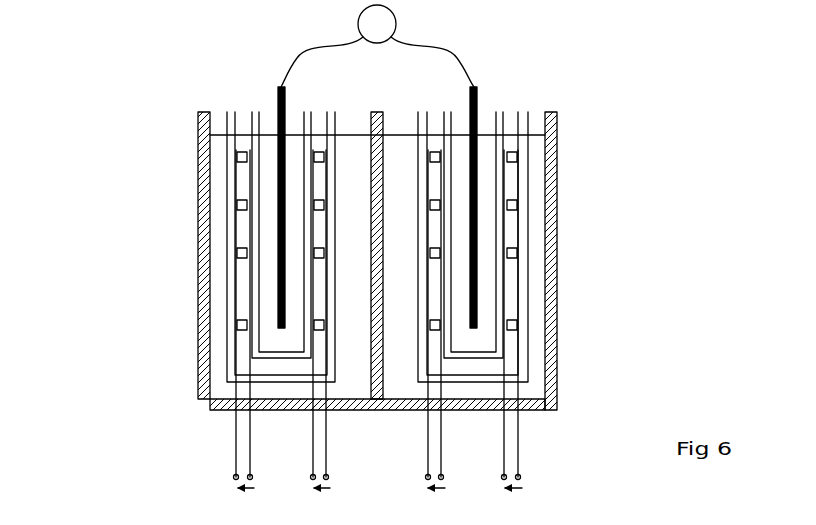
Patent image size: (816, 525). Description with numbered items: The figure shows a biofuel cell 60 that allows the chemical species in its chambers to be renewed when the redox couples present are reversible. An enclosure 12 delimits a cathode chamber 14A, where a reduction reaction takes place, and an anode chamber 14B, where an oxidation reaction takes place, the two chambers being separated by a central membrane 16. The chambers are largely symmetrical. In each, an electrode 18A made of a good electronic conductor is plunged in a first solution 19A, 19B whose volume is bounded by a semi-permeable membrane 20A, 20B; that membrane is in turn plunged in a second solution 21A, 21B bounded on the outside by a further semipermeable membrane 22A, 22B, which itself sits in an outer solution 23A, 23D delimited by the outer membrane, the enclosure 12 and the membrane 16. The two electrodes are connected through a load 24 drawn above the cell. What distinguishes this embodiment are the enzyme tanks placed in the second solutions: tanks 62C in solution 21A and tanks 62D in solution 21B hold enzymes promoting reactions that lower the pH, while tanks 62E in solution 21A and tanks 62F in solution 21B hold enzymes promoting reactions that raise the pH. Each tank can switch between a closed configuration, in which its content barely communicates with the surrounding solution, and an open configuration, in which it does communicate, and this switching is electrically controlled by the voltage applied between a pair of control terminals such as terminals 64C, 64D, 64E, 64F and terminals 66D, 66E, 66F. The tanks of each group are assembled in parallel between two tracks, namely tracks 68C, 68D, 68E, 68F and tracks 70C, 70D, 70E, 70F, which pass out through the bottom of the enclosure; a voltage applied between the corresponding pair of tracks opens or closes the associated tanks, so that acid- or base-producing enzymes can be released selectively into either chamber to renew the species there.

The enclosure 12 is at (556, 150).
The cathode chamber 14A is at (200, 392).
The anode chamber 14B is at (556, 392).
The membrane 16 is at (380, 410).
The electrode 18A is at (277, 90).
The first solution 19A is at (293, 130).
The first solution 19B is at (460, 130).
The semi-permeable membrane 20A is at (258, 111).
The semi-permeable membrane 20B is at (500, 111).
The second solution 21A is at (322, 130).
The second solution 21B is at (433, 130).
The semipermeable membrane 22A is at (228, 195).
The semipermeable membrane 22B is at (529, 195).
The solution 23A is at (220, 297).
The inner tube 23D is at (538, 297).
The load 24 is at (397, 22).
The biofuel cell 60 is at (118, 115).
The tank 62C is at (236, 153).
The tank 62D is at (430, 153).
The tank 62E is at (325, 152).
The tank 62F is at (518, 153).
The control terminal 64C is at (237, 324).
The control terminal 64D is at (430, 158).
The control terminal 64E is at (307, 112).
The control terminal 64F is at (507, 326).
The control terminal 66D is at (442, 112).
The control terminal 66E is at (372, 112).
The control terminal 66F is at (519, 328).
The track 68C is at (233, 424).
The track 68D is at (426, 455).
The track 68E is at (312, 446).
The track 68F is at (503, 446).
The track 70C is at (252, 477).
The track 70D is at (444, 477).
The track 70E is at (329, 476).
The track 70F is at (520, 445).